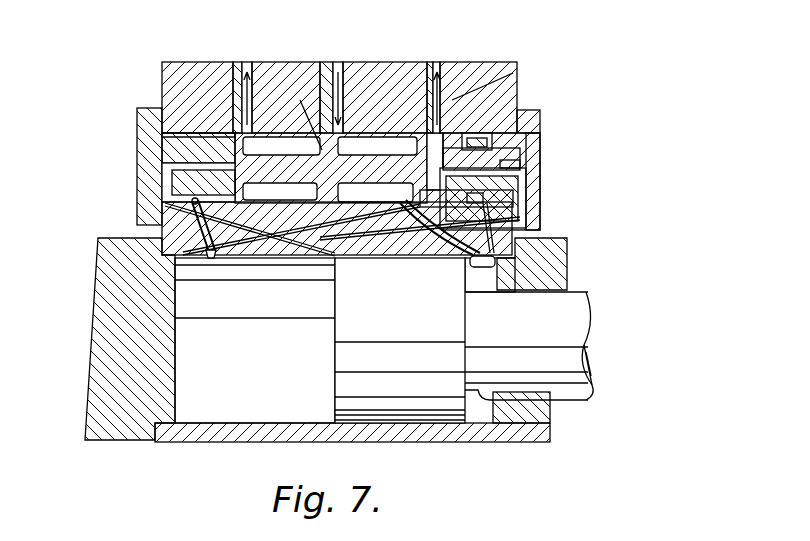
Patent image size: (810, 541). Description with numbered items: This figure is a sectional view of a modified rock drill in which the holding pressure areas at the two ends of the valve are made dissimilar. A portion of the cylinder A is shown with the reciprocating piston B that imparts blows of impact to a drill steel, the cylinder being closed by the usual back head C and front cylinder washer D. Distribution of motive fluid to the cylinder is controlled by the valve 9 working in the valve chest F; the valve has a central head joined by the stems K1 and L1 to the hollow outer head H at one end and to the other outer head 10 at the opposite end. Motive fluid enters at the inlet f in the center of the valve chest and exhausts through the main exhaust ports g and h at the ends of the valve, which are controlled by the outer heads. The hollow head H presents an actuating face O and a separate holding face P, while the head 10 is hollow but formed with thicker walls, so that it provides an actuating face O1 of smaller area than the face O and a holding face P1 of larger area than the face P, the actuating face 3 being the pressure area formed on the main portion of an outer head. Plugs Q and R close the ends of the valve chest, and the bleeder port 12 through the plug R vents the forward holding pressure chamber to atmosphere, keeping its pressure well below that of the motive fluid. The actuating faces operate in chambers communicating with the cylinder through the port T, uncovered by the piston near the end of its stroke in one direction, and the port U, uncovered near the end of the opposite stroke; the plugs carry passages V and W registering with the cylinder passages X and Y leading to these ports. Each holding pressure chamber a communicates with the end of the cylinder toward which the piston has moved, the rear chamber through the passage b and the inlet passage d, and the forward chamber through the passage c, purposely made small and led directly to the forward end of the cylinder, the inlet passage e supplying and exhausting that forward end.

The hollow outer head H is at (215, 138).
The main exhaust port g is at (240, 63).
The stem K1 is at (278, 165).
The valve 9 is at (313, 163).
The actuating face 3 is at (324, 110).
The inlet f is at (341, 67).
The stem L1 is at (378, 163).
The main exhaust port h is at (438, 67).
The valve chest F is at (477, 80).
The outer head 10 is at (513, 73).
The holding face P1 is at (525, 112).
The actuating face O1 is at (485, 140).
The bleeder port 12 is at (537, 127).
The plug R is at (520, 157).
The holding face P is at (162, 102).
The actuating face O is at (230, 158).
The plug Q is at (150, 152).
The passage W is at (172, 173).
The holding pressure chamber a is at (160, 200).
The passage b is at (190, 250).
The inlet passage d is at (223, 237).
The passage Y is at (283, 227).
The port T is at (330, 260).
The port U is at (397, 248).
The passage X is at (418, 242).
The inlet passage e is at (470, 257).
The passage c is at (520, 237).
The passage V is at (519, 200).
The back head C is at (127, 433).
The piston B is at (342, 387).
The cylinder A is at (443, 435).
The front cylinder washer D is at (532, 437).